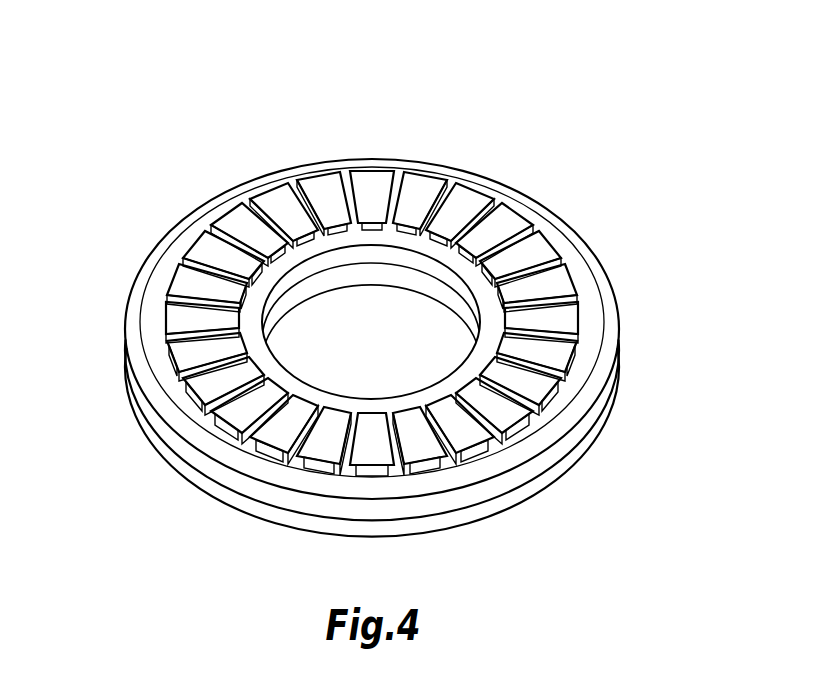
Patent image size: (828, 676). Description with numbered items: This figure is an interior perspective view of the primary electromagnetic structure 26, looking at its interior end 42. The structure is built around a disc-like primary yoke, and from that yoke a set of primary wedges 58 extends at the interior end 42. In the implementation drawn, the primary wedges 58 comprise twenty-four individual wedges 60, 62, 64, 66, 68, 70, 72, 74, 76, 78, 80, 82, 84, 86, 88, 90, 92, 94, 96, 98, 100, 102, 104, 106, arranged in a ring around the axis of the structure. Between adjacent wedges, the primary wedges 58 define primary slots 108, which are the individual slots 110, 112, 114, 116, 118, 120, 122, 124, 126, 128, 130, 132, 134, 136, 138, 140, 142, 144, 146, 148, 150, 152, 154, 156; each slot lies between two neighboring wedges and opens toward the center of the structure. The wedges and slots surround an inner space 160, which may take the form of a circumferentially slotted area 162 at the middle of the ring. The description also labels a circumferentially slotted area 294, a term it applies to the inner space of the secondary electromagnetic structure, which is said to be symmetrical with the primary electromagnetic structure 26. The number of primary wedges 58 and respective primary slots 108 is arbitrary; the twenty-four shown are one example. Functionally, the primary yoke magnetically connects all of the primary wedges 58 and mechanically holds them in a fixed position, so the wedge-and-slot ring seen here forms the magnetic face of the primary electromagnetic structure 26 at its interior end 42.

The primary electromagnetic structure 26 is at (195, 128).
The interior end 42 is at (215, 193).
The primary wedges 58 is at (337, 400).
The wedge 60 is at (370, 453).
The wedge 62 is at (430, 458).
The wedge 64 is at (500, 472).
The wedge 66 is at (527, 440).
The wedge 68 is at (548, 400).
The wedge 70 is at (560, 362).
The wedge 72 is at (573, 315).
The wedge 74 is at (563, 282).
The wedge 76 is at (543, 248).
The wedge 78 is at (515, 212).
The wedge 80 is at (472, 195).
The wedge 82 is at (423, 187).
The wedge 84 is at (370, 175).
The wedge 86 is at (320, 187).
The wedge 88 is at (270, 203).
The wedge 90 is at (227, 208).
The wedge 92 is at (207, 255).
The wedge 94 is at (183, 287).
The wedge 96 is at (175, 320).
The wedge 98 is at (190, 360).
The wedge 100 is at (208, 390).
The wedge 102 is at (235, 420).
The wedge 104 is at (265, 452).
The wedge 106 is at (306, 462).
The primary slots 108 is at (387, 398).
The slot 110 is at (400, 470).
The slot 112 is at (485, 503).
The slot 114 is at (517, 458).
The slot 116 is at (538, 420).
The slot 118 is at (555, 385).
The slot 120 is at (565, 348).
The slot 122 is at (577, 297).
The slot 124 is at (563, 262).
The slot 126 is at (537, 230).
The slot 128 is at (497, 203).
The slot 130 is at (452, 180).
The slot 132 is at (398, 170).
The slot 134 is at (342, 170).
The slot 136 is at (292, 180).
The slot 138 is at (262, 197).
The slot 140 is at (205, 235).
The slot 142 is at (192, 268).
The slot 144 is at (172, 305).
The slot 146 is at (175, 343).
The slot 148 is at (198, 375).
The slot 150 is at (218, 405).
The slot 152 is at (248, 438).
The slot 154 is at (282, 468).
The slot 156 is at (338, 466).
The inner space 160 is at (290, 283).
The circumferentially slotted area 162 is at (470, 373).
The circumferentially slotted area 294 is at (481, 322).